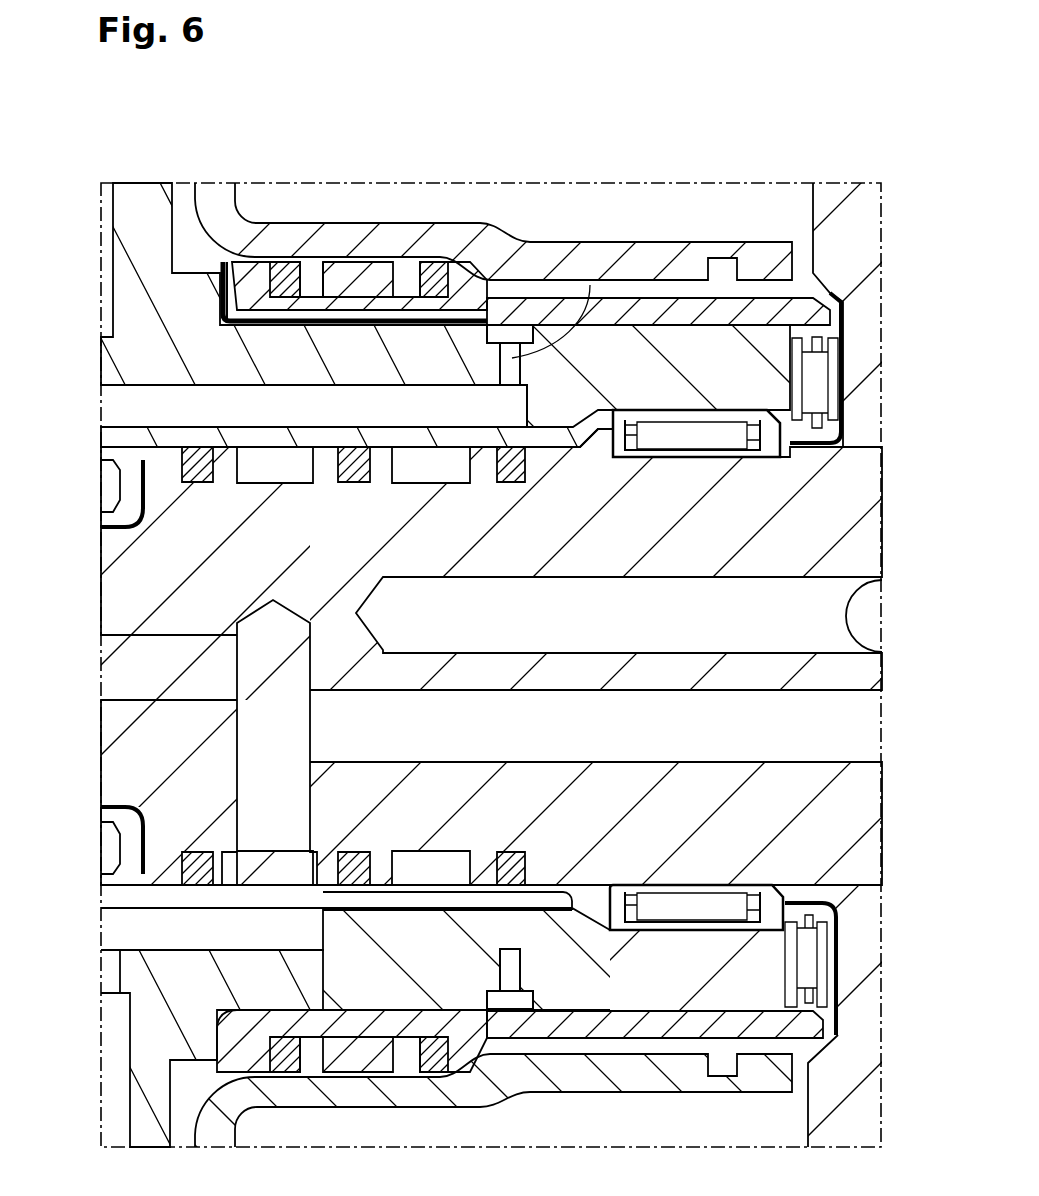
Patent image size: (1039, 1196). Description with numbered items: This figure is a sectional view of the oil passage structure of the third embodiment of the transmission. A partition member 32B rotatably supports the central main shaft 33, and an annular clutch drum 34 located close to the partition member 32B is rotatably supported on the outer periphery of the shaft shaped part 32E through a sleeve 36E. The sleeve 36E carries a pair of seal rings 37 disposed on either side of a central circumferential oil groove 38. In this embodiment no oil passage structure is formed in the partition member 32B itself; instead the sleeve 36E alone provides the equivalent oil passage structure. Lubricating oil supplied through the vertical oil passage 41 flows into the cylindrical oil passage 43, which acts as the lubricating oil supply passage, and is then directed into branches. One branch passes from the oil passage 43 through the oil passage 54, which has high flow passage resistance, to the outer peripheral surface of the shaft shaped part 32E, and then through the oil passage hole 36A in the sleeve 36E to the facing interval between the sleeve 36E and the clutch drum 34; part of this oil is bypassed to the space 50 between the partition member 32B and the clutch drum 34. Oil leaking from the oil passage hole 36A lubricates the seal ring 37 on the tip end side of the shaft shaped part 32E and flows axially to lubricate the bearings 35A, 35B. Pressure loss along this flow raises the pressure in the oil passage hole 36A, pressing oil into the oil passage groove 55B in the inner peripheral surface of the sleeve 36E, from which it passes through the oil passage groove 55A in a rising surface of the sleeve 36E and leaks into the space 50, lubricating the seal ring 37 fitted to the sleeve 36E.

The partition member 32B is at (140, 215).
The space 50 is at (196, 255).
The clutch drum 34 is at (272, 222).
The seal ring 37 is at (285, 268).
The circumferential oil groove 38 is at (360, 276).
The oil passage hole 36A is at (510, 355).
The oil passage 54 is at (590, 285).
The sleeve 36E is at (632, 310).
The bearing 35A is at (707, 428).
The shaft shaped part 32E is at (768, 363).
The bearing 35B is at (817, 383).
The oil passage groove 55A is at (225, 288).
The oil passage groove 55B is at (333, 272).
The oil passage 43 is at (118, 402).
The main shaft 33 is at (118, 602).
The vertical oil passage 41 is at (118, 1017).